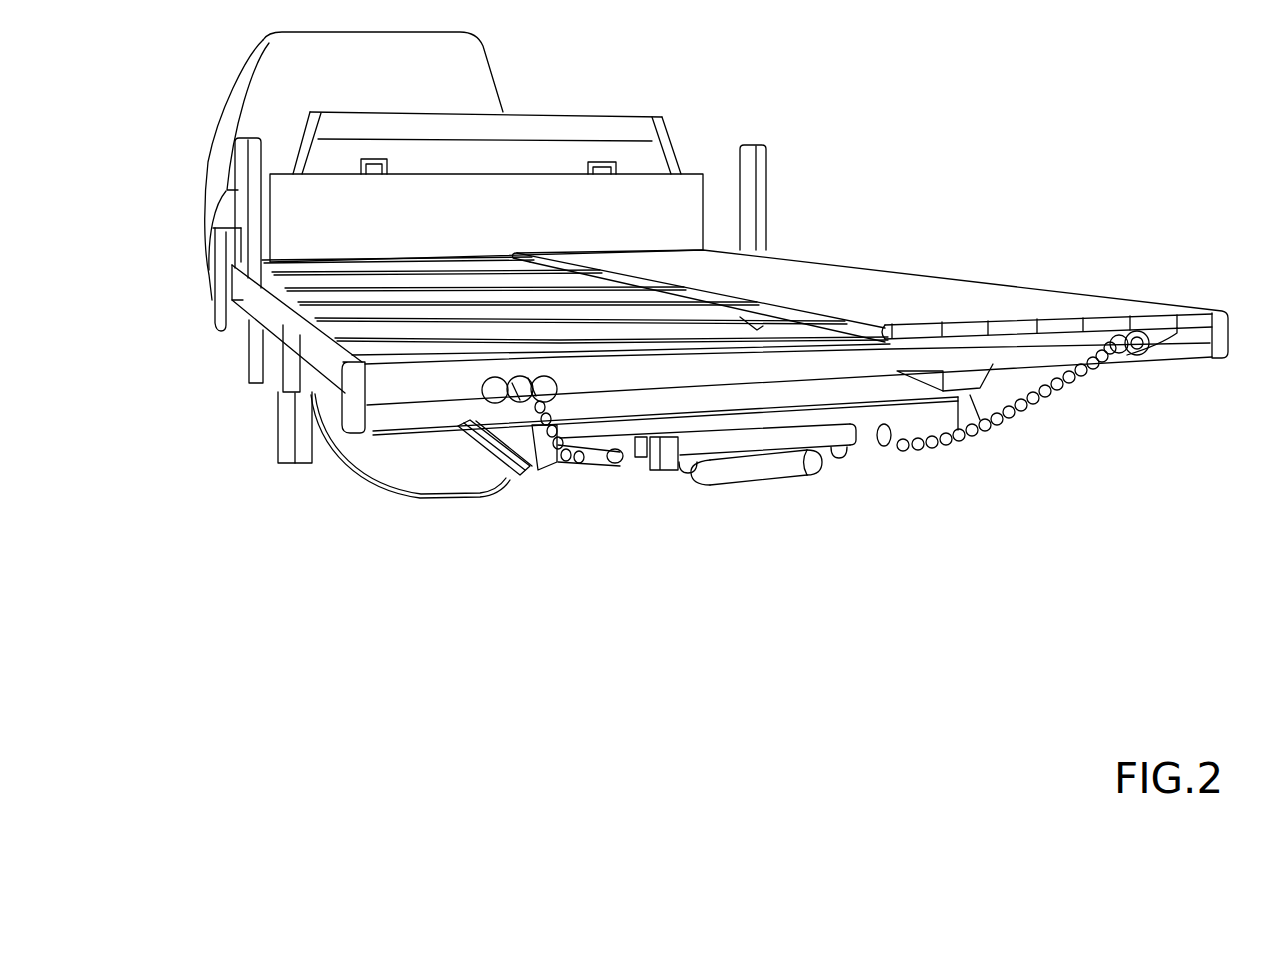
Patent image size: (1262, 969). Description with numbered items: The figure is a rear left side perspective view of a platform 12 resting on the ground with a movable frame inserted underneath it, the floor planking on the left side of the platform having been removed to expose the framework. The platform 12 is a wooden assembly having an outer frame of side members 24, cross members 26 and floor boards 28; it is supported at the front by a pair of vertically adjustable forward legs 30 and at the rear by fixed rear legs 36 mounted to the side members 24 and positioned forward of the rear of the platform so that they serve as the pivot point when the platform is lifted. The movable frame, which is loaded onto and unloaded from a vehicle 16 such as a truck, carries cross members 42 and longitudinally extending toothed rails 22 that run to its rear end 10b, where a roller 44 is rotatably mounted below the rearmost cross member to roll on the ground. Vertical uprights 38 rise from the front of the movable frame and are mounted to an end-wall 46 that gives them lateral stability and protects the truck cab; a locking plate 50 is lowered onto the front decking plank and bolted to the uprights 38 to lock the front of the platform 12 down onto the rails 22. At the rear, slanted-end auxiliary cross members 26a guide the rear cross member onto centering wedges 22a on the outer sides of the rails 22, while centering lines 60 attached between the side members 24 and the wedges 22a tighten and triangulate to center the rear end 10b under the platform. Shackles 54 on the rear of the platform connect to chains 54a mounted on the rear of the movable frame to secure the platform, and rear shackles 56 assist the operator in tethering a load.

The rear end of movable frame 10b is at (503, 507).
The platform 12 is at (943, 300).
The vehicle 16 is at (223, 82).
The toothed rail 22 is at (483, 447).
The centering wedge 22a is at (537, 467).
The side member 24 is at (247, 303).
The cross member 26 is at (412, 333).
The auxiliary cross member 26a is at (740, 317).
The floor board 28 is at (861, 314).
The forward leg 30 is at (247, 237).
The rear leg 36 is at (292, 426).
The vertical upright 38 is at (376, 158).
The cross member 42 is at (826, 419).
The roller 44 is at (775, 471).
The end-wall 46 is at (642, 133).
The locking plate 50 is at (558, 235).
The shackle 54 is at (560, 384).
The chain 54a is at (585, 463).
The rear shackle 56 is at (473, 396).
The centering line 60 is at (432, 493).